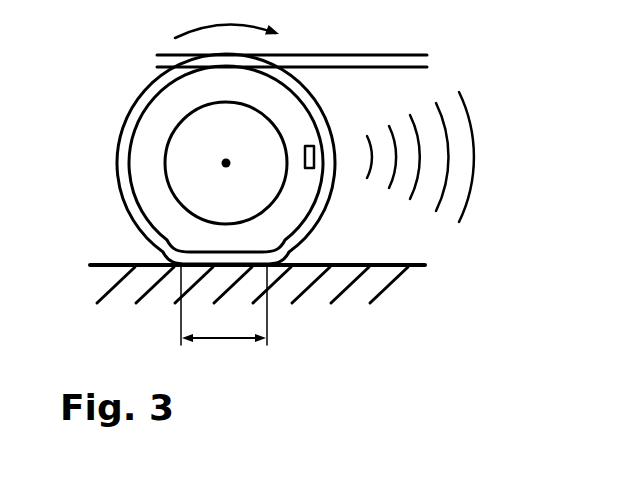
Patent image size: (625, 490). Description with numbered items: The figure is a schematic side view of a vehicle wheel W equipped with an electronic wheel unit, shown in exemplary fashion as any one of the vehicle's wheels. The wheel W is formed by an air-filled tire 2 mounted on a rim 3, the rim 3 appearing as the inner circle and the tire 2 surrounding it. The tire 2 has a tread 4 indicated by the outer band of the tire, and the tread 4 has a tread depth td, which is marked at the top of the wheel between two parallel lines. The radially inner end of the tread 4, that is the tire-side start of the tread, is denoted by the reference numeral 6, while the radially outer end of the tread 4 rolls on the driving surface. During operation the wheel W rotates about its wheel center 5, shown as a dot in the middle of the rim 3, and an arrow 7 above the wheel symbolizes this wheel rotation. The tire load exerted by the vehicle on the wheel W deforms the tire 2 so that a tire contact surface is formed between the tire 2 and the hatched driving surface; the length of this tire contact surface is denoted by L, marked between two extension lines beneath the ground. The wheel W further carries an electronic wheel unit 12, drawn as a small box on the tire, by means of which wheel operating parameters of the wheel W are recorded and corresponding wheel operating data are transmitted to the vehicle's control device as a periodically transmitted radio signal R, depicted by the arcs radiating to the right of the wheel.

The tire 2 is at (145, 178).
The rim 3 is at (257, 183).
The tread 4 is at (127, 190).
The wheel center 5 is at (222, 166).
The radially inner end of the tread 6 is at (135, 217).
The arrow 7 is at (227, 19).
The electronic wheel unit 12 is at (312, 157).
The wheel W is at (110, 90).
The radio signal R is at (480, 84).
The tread depth td is at (422, 28).
The length of the tire contact surface L is at (224, 305).